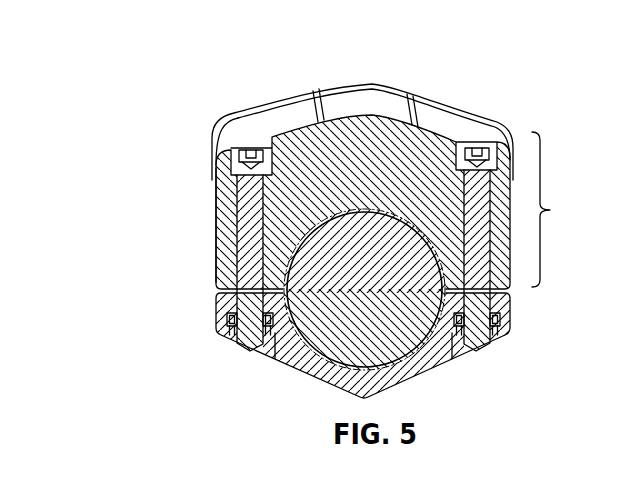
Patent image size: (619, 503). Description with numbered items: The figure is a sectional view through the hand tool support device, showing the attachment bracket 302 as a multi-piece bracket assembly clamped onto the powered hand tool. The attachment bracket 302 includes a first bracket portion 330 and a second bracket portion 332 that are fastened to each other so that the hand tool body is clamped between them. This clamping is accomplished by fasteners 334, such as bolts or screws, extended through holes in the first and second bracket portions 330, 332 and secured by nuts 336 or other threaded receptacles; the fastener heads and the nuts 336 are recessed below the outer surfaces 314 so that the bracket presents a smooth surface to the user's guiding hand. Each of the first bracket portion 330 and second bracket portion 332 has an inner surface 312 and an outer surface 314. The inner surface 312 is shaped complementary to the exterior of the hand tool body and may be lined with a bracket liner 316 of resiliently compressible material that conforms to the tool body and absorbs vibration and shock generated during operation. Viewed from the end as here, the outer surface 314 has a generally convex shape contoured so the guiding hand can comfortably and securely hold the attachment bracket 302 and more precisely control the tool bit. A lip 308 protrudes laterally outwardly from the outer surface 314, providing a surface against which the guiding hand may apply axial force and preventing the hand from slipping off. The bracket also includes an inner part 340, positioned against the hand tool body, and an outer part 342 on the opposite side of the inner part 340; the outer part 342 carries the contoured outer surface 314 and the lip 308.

The attachment bracket 302 is at (214, 122).
The lip 308 is at (271, 99).
The inner surface 312 is at (315, 226).
The outer surface 314 is at (436, 108).
The bracket liner 316 is at (410, 231).
The first bracket portion 330 is at (405, 242).
The second bracket portion 332 is at (512, 310).
The fasteners 334 is at (273, 142).
The nuts 336 is at (233, 333).
The inner part 340 is at (214, 224).
The outer part 342 is at (212, 148).